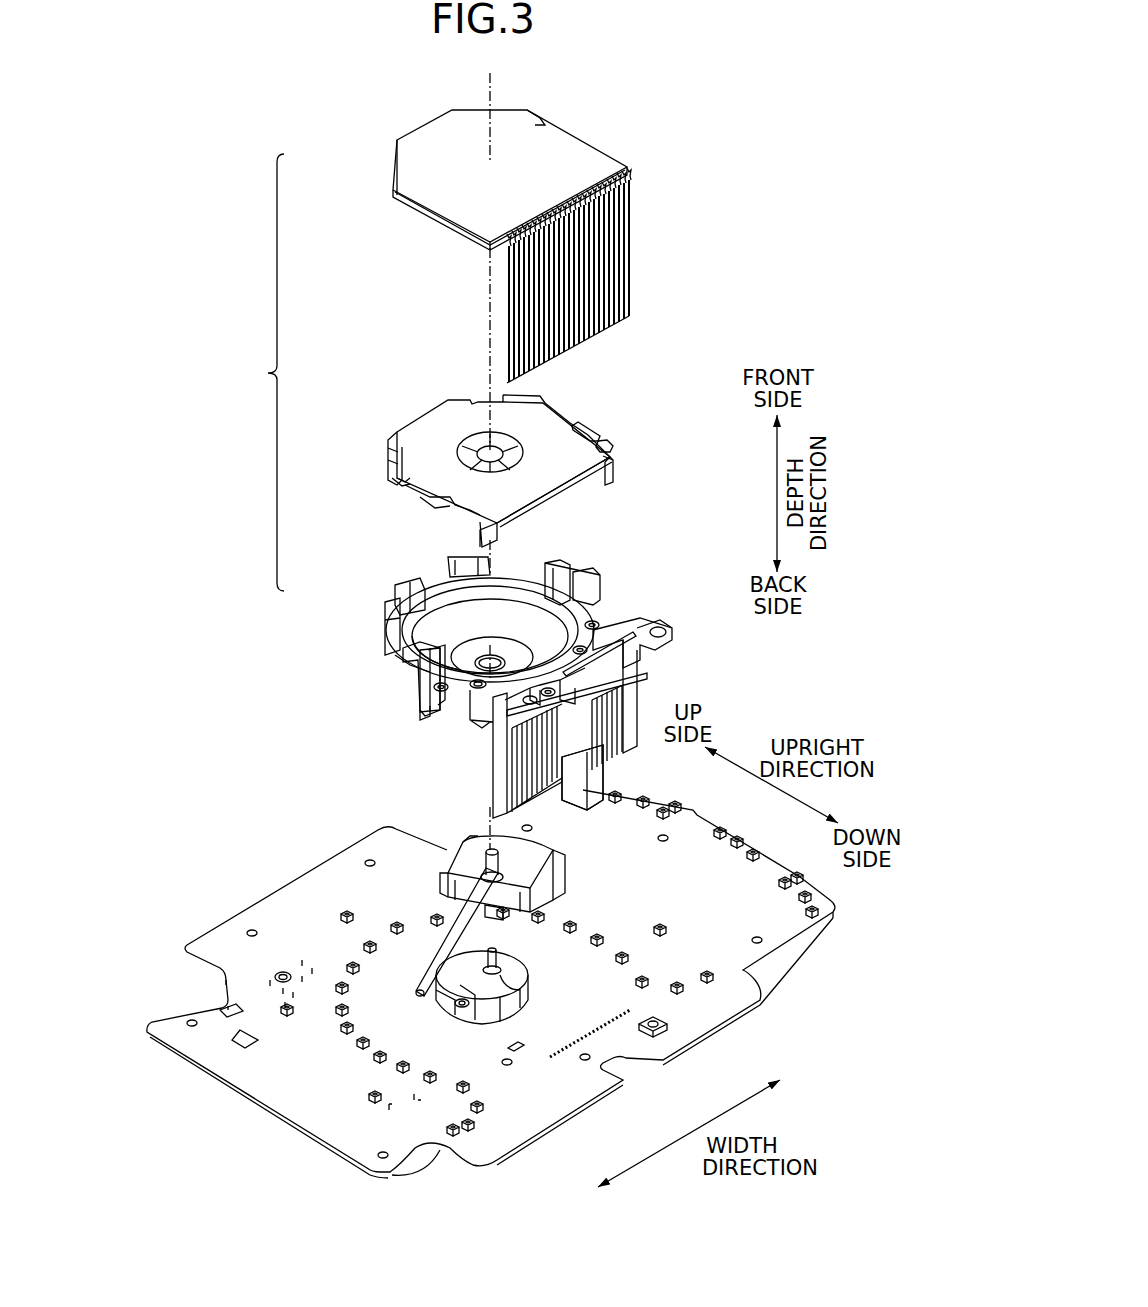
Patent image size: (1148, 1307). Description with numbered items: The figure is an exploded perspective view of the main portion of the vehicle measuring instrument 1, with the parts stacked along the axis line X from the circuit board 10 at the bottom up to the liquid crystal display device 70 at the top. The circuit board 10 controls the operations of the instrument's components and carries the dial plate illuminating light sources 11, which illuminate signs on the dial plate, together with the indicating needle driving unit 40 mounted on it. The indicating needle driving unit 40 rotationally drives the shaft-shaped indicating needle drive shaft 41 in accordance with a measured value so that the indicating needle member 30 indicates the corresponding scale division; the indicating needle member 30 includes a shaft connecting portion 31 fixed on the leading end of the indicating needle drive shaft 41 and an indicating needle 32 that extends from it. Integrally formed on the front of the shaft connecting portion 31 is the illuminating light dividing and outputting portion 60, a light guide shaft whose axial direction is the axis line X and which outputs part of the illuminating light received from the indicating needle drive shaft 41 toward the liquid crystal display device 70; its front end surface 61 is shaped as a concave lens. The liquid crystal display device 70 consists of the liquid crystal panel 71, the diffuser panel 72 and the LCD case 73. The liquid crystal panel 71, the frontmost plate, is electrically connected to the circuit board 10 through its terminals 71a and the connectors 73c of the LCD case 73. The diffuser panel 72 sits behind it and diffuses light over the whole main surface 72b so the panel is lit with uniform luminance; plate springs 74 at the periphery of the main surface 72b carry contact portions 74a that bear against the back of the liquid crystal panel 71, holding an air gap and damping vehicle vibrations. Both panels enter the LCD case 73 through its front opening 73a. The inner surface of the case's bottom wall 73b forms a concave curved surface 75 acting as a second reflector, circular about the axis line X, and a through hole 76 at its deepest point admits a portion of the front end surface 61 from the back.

The vehicle measuring instrument 1 is at (150, 133).
The axis line X is at (497, 100).
The circuit board 10 is at (762, 992).
The dial plate illuminating light sources 11 is at (375, 1095).
The indicating needle member 30 is at (556, 894).
The shaft connecting portion 31 is at (494, 912).
The indicating needle 32 is at (442, 942).
The indicating needle driving unit 40 is at (533, 1002).
The indicating needle drive shaft 41 is at (520, 955).
The illuminating light dividing and outputting portion 60 is at (505, 860).
The front end surface 61 is at (478, 836).
The liquid crystal display device 70 is at (262, 372).
The liquid crystal panel 71 is at (392, 153).
The terminals 71a is at (628, 240).
The diffuser panel 72 is at (400, 416).
The main surface 72b is at (555, 465).
The LCD case 73 is at (378, 610).
The opening 73a is at (566, 614).
The bottom wall 73b is at (441, 676).
The connectors 73c is at (630, 750).
The plate springs 74 is at (590, 428).
The contact portion 74a is at (605, 441).
The curved surface 75 is at (462, 660).
The through hole 76 is at (496, 654).